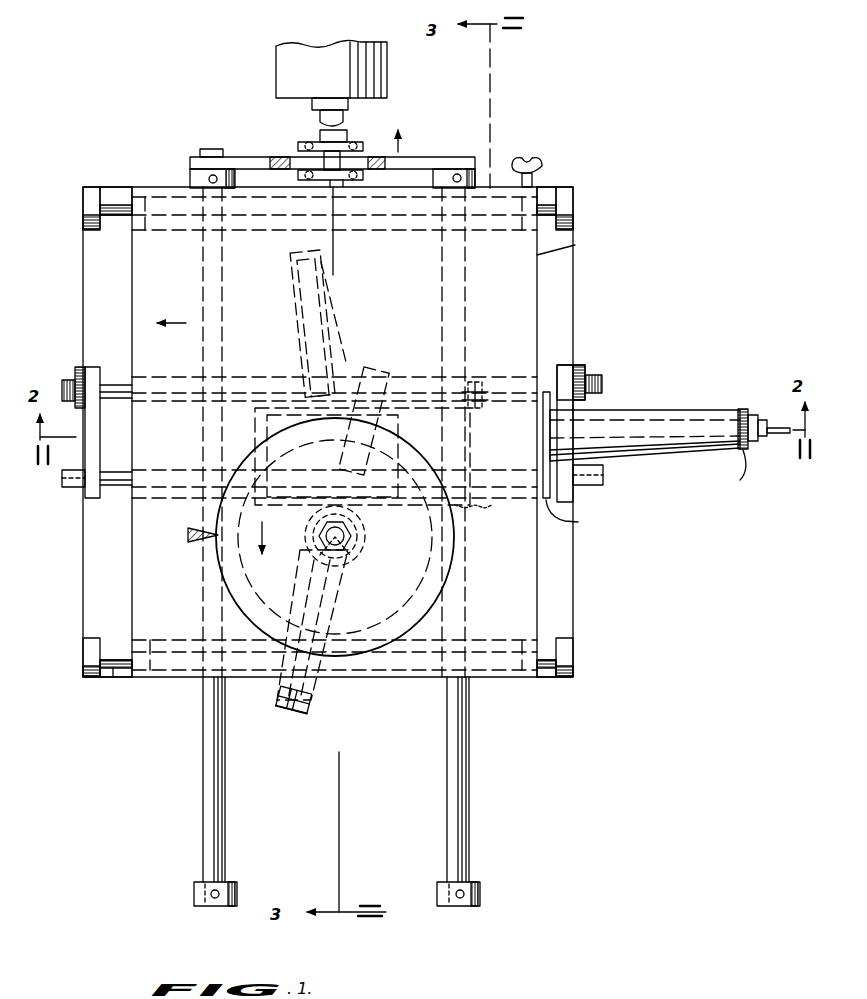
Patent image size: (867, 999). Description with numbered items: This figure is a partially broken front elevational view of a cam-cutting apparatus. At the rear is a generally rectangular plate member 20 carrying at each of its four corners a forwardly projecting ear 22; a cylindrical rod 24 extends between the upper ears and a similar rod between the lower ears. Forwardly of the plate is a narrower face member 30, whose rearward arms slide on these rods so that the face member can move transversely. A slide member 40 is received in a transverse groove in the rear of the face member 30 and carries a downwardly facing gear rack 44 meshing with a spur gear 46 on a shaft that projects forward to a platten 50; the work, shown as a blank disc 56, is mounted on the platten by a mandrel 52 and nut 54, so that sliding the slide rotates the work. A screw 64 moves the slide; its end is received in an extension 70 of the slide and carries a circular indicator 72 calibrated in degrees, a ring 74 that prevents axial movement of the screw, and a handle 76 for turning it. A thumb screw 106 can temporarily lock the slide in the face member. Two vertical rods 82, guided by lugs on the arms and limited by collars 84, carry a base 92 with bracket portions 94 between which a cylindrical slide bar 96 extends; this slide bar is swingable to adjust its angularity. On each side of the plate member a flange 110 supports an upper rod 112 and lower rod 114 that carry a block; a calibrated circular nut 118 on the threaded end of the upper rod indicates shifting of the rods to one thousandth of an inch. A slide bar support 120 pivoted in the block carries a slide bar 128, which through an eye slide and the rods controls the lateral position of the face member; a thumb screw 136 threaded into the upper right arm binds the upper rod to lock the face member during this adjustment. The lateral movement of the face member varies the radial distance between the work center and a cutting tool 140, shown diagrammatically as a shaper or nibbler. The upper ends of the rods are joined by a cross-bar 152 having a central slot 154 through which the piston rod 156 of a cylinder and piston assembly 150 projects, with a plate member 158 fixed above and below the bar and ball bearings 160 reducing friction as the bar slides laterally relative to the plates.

The plate member 20 is at (573, 278).
The ear 22 is at (85, 189).
The cylindrical rod 24 is at (112, 190).
The face member 30 is at (568, 243).
The slide member 40 is at (578, 522).
The gear rack 44 is at (490, 508).
The spur gear 46 is at (355, 524).
The platten 50 is at (450, 586).
The mandrel 52 is at (320, 560).
The nut 54 is at (355, 544).
The disc 56 is at (432, 600).
The screw 64 is at (706, 412).
The extension 70 is at (630, 410).
The circular indicator 72 is at (742, 478).
The ring 74 is at (752, 416).
The handle 76 is at (778, 436).
The rod 82 is at (203, 790).
The collar 84 is at (190, 172).
The base 92 is at (312, 697).
The bracket portion 94 is at (308, 714).
The slide bar 96 is at (282, 702).
The thumb screw 106 is at (478, 383).
The flange 110 is at (100, 440).
The upper rod 112 is at (602, 386).
The lower rod 114 is at (603, 475).
The circular nut 118 is at (78, 370).
The slide bar support 120 is at (335, 306).
The slide bar 128 is at (340, 326).
The thumb screw 136 is at (535, 160).
The cutting tool 140 is at (186, 540).
The cylinder and piston assembly 150 is at (342, 74).
The cross-bar 152 is at (420, 158).
The slot 154 is at (360, 176).
The piston rod 156 is at (345, 120).
The plate member 158 is at (298, 148).
The ball bearings 160 is at (415, 132).